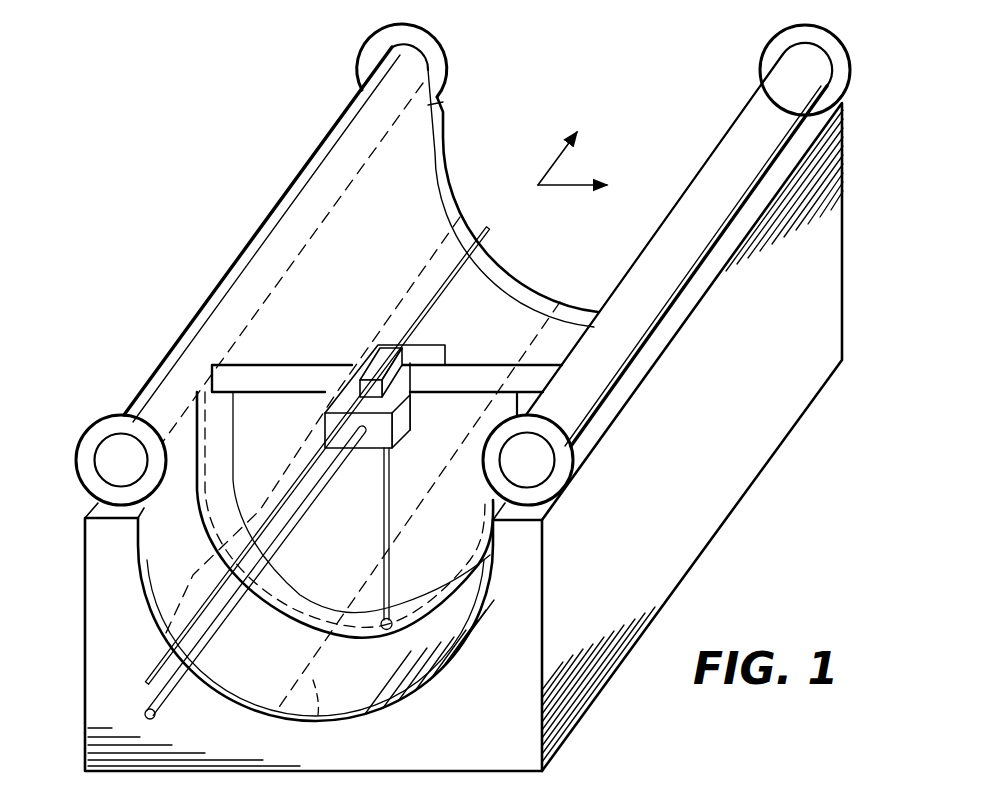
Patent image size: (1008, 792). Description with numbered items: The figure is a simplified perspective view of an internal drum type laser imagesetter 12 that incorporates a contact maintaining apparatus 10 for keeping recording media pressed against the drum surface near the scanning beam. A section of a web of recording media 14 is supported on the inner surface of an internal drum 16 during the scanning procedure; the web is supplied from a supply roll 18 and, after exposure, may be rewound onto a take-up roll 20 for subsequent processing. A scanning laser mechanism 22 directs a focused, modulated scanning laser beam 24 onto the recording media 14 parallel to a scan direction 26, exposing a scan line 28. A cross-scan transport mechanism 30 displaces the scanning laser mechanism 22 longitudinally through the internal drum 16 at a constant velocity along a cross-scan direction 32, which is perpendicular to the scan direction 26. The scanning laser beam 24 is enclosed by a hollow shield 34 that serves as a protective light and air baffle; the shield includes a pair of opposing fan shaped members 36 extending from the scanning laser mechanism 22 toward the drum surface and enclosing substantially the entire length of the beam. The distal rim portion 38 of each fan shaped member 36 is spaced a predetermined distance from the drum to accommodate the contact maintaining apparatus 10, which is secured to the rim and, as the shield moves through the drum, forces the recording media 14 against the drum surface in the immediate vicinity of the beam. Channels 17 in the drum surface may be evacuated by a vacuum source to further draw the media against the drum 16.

The contact maintaining apparatus 10 is at (200, 363).
The internal drum type laser imagesetter 12 is at (805, 491).
The recording media 14 is at (178, 538).
The internal drum 16 is at (503, 737).
The channels 17 is at (163, 633).
The supply roll 18 is at (313, 170).
The take-up roll 20 is at (735, 148).
The scanning laser mechanism 22 is at (403, 428).
The scanning laser beam 24 is at (382, 515).
The scan direction 26 is at (560, 188).
The scan line 28 is at (292, 612).
The cross-scan transport mechanism 30 is at (445, 286).
The cross-scan direction 32 is at (560, 152).
The hollow shield 34 is at (345, 342).
The fan shaped members 36 is at (287, 392).
The distal rim portion 38 is at (238, 470).